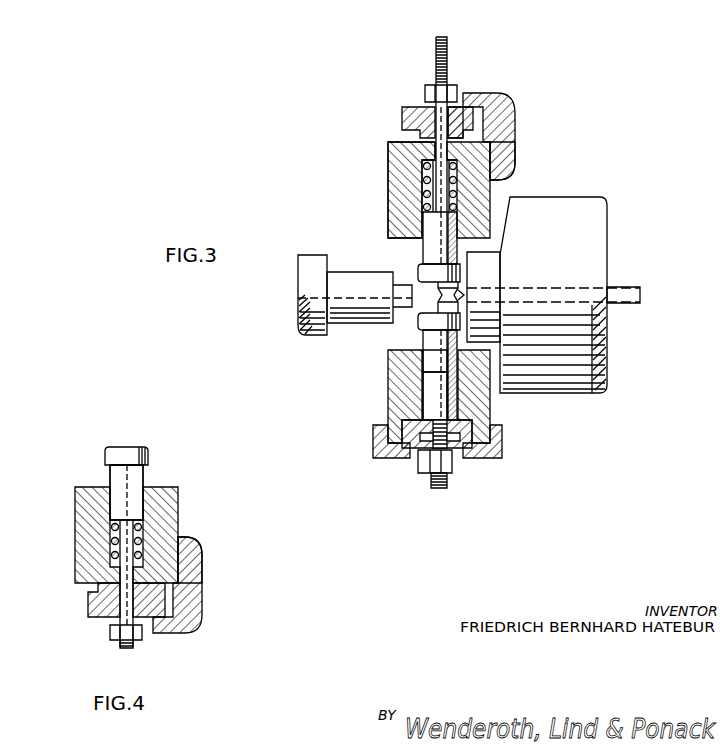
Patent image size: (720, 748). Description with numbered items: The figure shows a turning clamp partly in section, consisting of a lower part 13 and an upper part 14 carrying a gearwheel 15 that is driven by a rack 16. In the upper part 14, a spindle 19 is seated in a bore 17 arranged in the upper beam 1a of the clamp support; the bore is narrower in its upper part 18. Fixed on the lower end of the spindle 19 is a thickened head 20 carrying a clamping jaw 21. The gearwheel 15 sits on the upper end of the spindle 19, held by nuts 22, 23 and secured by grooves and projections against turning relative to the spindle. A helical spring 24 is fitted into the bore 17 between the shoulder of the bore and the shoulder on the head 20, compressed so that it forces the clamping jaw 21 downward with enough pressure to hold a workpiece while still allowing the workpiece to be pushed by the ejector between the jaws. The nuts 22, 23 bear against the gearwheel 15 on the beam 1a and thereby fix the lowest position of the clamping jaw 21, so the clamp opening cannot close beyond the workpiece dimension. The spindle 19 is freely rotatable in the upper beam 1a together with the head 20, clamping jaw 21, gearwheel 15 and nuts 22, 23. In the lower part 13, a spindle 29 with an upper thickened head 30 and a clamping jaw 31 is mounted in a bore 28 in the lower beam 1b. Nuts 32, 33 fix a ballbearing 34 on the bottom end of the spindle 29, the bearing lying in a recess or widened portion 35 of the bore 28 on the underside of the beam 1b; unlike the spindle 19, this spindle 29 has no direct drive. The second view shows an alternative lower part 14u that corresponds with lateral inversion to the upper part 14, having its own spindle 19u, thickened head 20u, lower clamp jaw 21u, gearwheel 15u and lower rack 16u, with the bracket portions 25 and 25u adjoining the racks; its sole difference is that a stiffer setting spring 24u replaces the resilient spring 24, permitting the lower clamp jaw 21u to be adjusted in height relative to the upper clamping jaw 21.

In FIG. 3, the upper beam 1a is at (390, 163).
In FIG. 3, the lower beam 1b is at (477, 398).
In FIG. 4, the lower beam 1b is at (77, 517).
In FIG. 3, the lower part 13 is at (369, 452).
In FIG. 3, the upper part 14 is at (389, 98).
In FIG. 4, the lower part 14u is at (209, 480).
In FIG. 3, the gearwheel 15 is at (402, 115).
In FIG. 4, the gearwheel 15u is at (88, 603).
In FIG. 3, the rack 16 is at (492, 97).
In FIG. 4, the lower rack 16u is at (190, 597).
In FIG. 3, the bore 17 is at (422, 193).
In FIG. 3, the upper part of bore 18 is at (427, 157).
In FIG. 3, the spindle 19 is at (447, 45).
In FIG. 4, the spindle 19u is at (118, 647).
In FIG. 3, the thickened head 20 is at (422, 223).
In FIG. 4, the thickened head 20u is at (117, 482).
In FIG. 3, the clamping jaw 21 is at (418, 266).
In FIG. 4, the lower clamp jaw 21u is at (148, 465).
In FIG. 3, the nut 22 is at (430, 84).
In FIG. 3, the nut 23 is at (455, 107).
In FIG. 3, the helical spring 24 is at (493, 190).
In FIG. 4, the setting spring 24u is at (147, 528).
In FIG. 3, the bracket leg 25 is at (510, 126).
In FIG. 4, the bracket leg (variant) 25u is at (193, 550).
In FIG. 3, the bore 28 is at (427, 355).
In FIG. 3, the spindle 29 is at (432, 488).
In FIG. 3, the upper thickened head 30 is at (430, 372).
In FIG. 3, the clamping jaw 31 is at (417, 325).
In FIG. 3, the nut 32 is at (425, 468).
In FIG. 3, the nut 33 is at (427, 447).
In FIG. 3, the ballbearing 34 is at (460, 453).
In FIG. 3, the recess or widened portion 35 is at (403, 428).